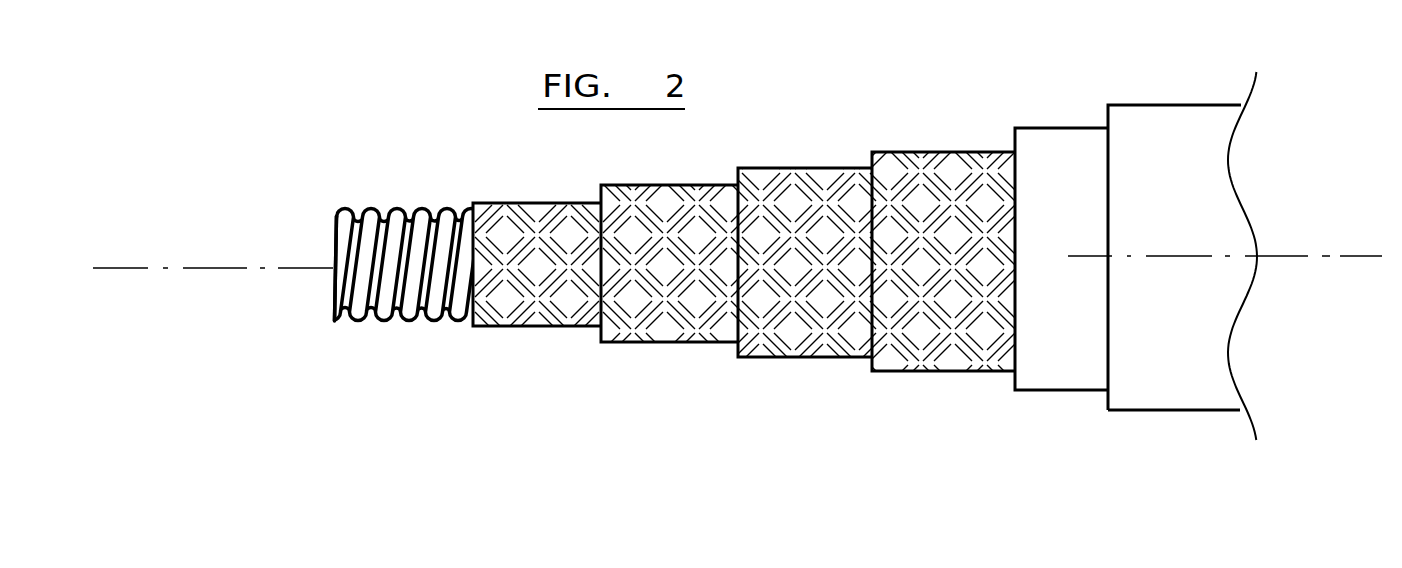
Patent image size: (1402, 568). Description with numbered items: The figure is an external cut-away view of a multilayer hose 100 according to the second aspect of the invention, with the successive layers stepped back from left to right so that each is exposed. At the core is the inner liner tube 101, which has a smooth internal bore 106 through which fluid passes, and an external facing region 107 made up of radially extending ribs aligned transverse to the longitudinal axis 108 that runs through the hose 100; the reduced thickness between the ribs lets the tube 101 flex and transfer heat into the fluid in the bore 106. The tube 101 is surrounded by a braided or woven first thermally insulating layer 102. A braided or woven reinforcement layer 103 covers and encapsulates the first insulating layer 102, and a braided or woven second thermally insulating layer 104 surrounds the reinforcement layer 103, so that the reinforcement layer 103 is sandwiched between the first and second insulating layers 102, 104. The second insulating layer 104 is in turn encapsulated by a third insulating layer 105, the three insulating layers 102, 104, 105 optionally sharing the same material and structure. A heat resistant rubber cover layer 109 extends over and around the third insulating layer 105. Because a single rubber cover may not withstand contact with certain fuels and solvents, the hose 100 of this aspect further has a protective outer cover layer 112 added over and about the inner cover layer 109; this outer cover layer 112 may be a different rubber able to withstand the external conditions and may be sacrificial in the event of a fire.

The hose 100 is at (796, 139).
The inner liner tube 101 is at (412, 323).
The first thermally insulating layer 102 is at (543, 327).
The reinforcement layer 103 is at (674, 343).
The second thermally insulating layer 104 is at (808, 358).
The third insulating layer 105 is at (943, 372).
The internal bore 106 is at (323, 292).
The external facing region 107 is at (436, 208).
The longitudinal axis 108 is at (217, 268).
The rubber cover layer 109 is at (1062, 127).
The protective outer cover layer 112 is at (1173, 106).